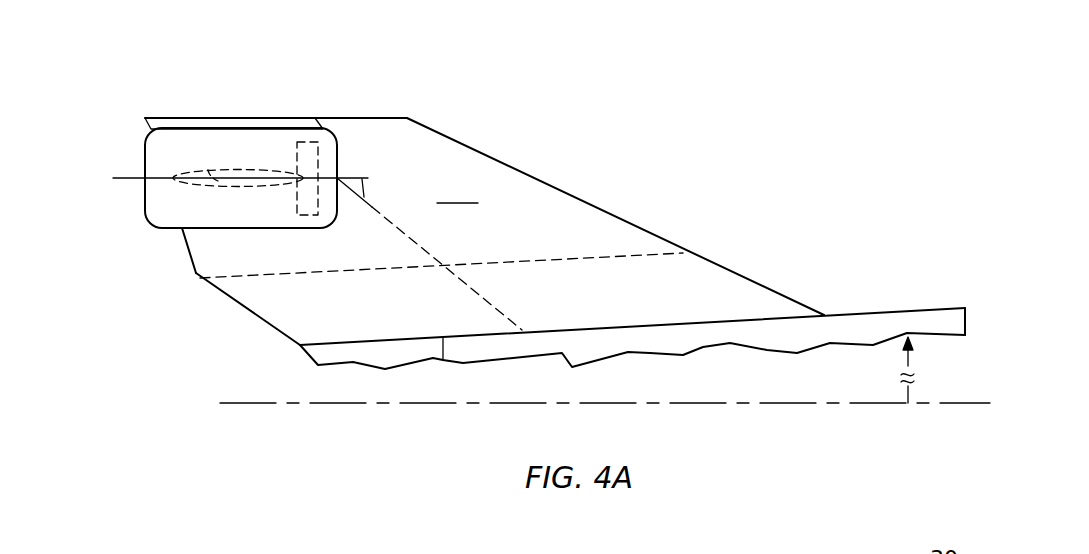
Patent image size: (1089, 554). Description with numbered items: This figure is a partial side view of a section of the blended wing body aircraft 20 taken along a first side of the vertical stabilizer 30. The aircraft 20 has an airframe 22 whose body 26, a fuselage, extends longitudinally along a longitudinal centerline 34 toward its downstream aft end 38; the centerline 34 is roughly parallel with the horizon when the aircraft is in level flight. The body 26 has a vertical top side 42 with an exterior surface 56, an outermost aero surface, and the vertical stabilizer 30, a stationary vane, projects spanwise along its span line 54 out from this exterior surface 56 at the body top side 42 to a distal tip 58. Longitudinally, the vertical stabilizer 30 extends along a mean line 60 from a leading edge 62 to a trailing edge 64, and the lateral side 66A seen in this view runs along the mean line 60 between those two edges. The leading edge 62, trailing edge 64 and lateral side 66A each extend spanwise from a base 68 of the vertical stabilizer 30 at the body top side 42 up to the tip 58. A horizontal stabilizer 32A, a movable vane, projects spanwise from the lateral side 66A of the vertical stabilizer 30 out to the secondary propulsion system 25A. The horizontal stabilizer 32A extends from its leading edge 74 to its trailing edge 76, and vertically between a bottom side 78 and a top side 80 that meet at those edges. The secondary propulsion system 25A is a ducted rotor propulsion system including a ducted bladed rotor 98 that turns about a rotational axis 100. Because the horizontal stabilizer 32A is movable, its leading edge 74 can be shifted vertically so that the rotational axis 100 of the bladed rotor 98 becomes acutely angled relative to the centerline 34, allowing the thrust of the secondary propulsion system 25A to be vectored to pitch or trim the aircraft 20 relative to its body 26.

The blended wing body aircraft 20 is at (983, 144).
The airframe 22 is at (965, 281).
The secondary propulsion system 25A is at (243, 120).
The body 26 is at (990, 318).
The vertical stabilizer 30 is at (534, 166).
The horizontal stabilizer 32A is at (224, 198).
The longitudinal centerline 34 is at (978, 414).
The aft end 38 is at (300, 348).
The top side 42 is at (632, 286).
The exterior surface 56 is at (921, 309).
The span line 54 is at (423, 250).
The distal tip 58 is at (299, 117).
The mean line 60 is at (552, 262).
The leading edge 62 is at (620, 213).
The trailing edge 64 is at (186, 248).
The lateral side 66A is at (458, 190).
The base 68 is at (443, 358).
The leading edge 74 is at (307, 178).
The trailing edge 76 is at (168, 178).
The bottom side 78 is at (192, 185).
The top side 80 is at (208, 170).
The ducted bladed rotor 98 is at (323, 118).
The rotational axis 100 is at (362, 200).